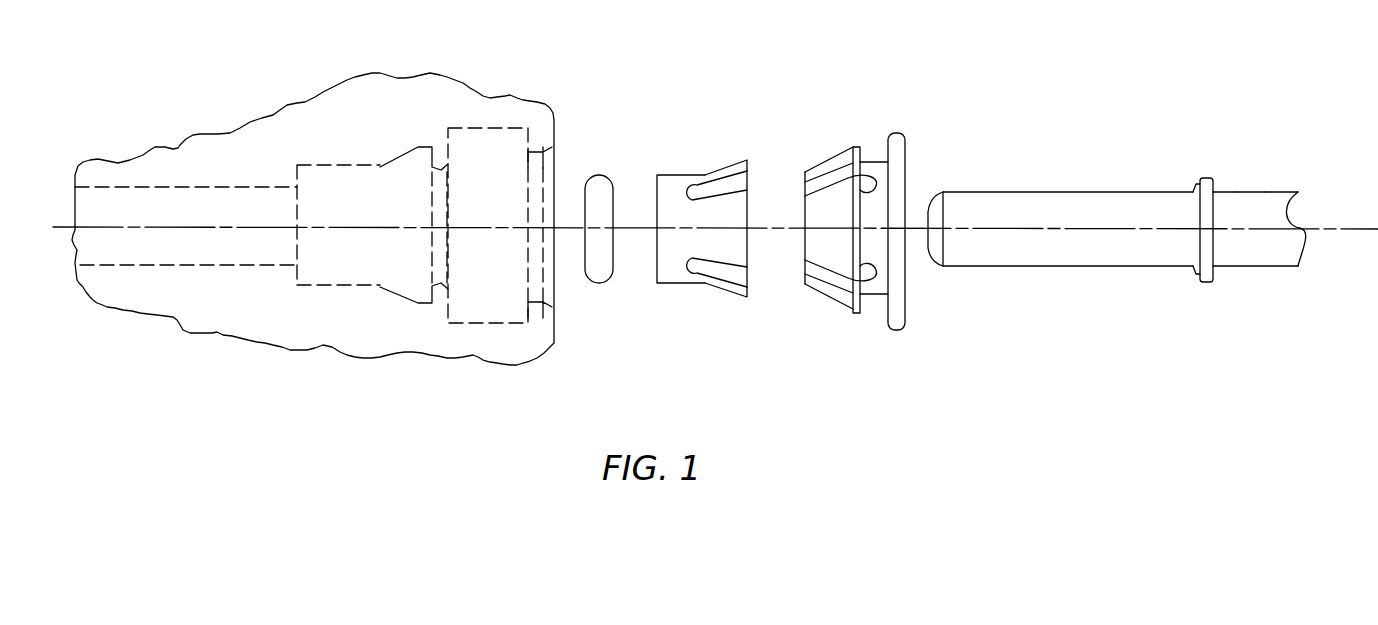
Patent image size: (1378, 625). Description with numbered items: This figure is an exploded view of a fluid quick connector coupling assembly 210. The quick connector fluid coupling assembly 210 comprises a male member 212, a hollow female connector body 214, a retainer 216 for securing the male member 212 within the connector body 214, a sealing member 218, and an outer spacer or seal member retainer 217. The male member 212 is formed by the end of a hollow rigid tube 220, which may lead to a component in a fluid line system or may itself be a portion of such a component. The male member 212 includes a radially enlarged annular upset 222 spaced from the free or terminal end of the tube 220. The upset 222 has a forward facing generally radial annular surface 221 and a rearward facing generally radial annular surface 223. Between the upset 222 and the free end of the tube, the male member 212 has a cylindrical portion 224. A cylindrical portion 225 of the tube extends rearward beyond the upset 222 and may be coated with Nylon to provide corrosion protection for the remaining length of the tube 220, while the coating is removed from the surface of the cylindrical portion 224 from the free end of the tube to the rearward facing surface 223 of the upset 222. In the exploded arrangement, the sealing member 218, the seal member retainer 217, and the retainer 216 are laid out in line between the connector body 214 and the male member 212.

The quick connector fluid coupling assembly 210 is at (745, 194).
The male member 212 is at (1127, 196).
The hollow female connector body 214 is at (346, 66).
The retainer 216 is at (855, 147).
The outer spacer or seal member retainer 217 is at (730, 158).
The sealing member 218 is at (598, 185).
The hollow rigid tube 220 is at (1278, 188).
The forward facing generally radial annular surface 221 is at (1196, 273).
The radially enlarged annular upset 222 is at (1205, 178).
The rearward facing generally radial annular surface 223 is at (1220, 188).
The cylindrical portion 224 is at (1032, 207).
The cylindrical portion 225 is at (1243, 190).